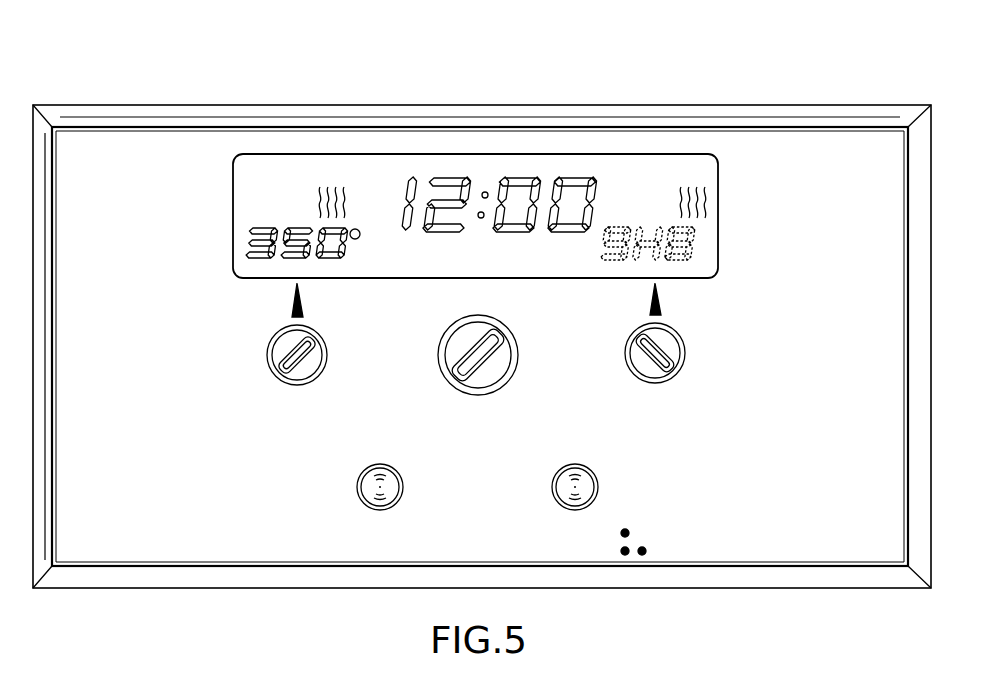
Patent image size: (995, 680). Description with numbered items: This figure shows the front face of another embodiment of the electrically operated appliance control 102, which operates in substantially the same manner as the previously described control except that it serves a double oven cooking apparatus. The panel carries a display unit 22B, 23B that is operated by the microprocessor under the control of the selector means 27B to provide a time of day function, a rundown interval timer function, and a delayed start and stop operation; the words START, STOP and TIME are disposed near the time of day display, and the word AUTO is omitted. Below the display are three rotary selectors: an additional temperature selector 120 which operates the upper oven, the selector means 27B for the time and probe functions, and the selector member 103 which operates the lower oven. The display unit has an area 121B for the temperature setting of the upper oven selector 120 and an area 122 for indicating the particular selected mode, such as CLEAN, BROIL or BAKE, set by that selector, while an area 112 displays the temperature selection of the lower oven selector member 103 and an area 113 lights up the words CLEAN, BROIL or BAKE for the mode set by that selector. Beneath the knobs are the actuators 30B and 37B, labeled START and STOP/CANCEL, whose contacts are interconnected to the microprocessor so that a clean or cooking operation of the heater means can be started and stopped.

The control 102 is at (794, 68).
The display unit 22B is at (202, 548).
The display unit 23B is at (512, 155).
The area 122 is at (231, 196).
The area 121B is at (246, 268).
The area 113 is at (688, 172).
The area 112 is at (706, 248).
The temperature selector 120 is at (280, 348).
The selector means 27B is at (500, 357).
The selector member 103 is at (677, 348).
The actuator 30B is at (392, 487).
The actuator 37B is at (583, 488).